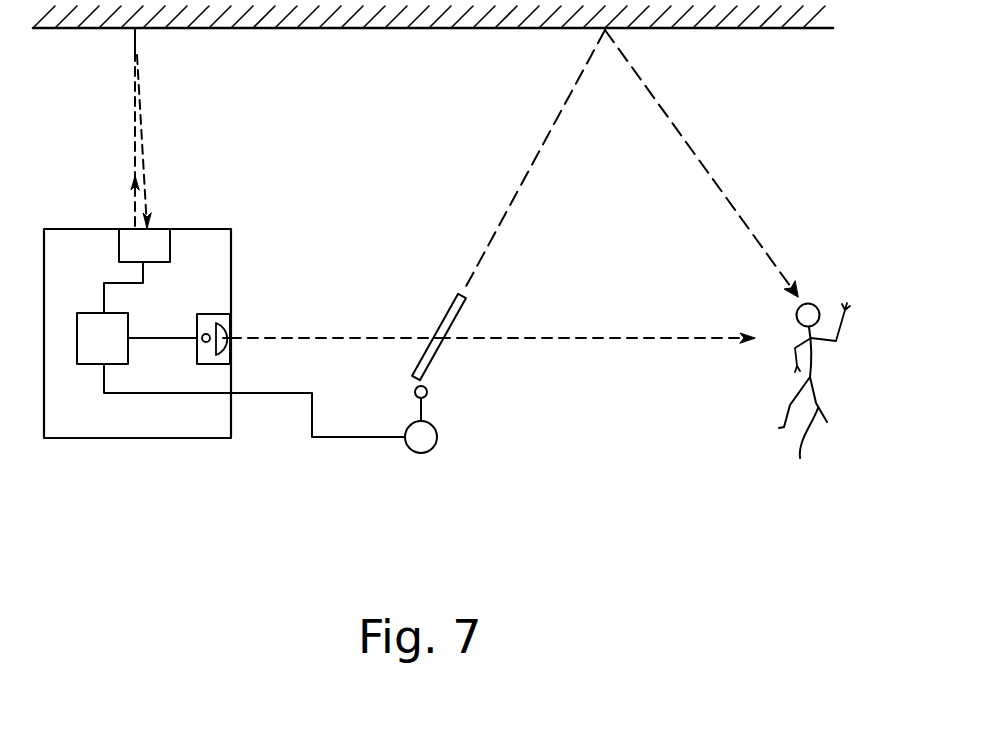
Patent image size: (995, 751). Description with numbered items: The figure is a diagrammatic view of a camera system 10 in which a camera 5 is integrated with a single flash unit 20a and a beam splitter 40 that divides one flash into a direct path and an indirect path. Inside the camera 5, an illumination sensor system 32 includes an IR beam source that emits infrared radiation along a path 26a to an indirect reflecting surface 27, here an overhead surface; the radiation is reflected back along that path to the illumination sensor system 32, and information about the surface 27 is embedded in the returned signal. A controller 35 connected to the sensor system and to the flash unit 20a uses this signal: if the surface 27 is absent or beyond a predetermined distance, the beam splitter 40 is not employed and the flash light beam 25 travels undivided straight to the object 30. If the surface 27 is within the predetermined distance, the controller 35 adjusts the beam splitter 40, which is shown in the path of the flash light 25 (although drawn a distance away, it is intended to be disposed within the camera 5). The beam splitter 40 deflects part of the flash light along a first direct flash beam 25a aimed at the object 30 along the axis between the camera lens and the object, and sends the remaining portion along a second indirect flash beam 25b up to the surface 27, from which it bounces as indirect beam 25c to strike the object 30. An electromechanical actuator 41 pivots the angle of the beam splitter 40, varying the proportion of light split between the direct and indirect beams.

The camera 5 is at (92, 430).
The camera system 10 is at (200, 508).
The flash unit 20a is at (215, 328).
The flash light beam 25 is at (342, 335).
The first direct flash beam 25a is at (605, 335).
The second indirect flash beam 25b is at (555, 130).
The second indirect flash beam 25c is at (717, 180).
The IR beam path 26a is at (133, 90).
The indirect reflecting surface 27 is at (328, 32).
The object 30 is at (814, 399).
The illumination sensor system 32 is at (118, 243).
The controller 35 is at (114, 352).
The beam splitter 40 is at (443, 342).
The electromechanical actuator 41 is at (443, 380).